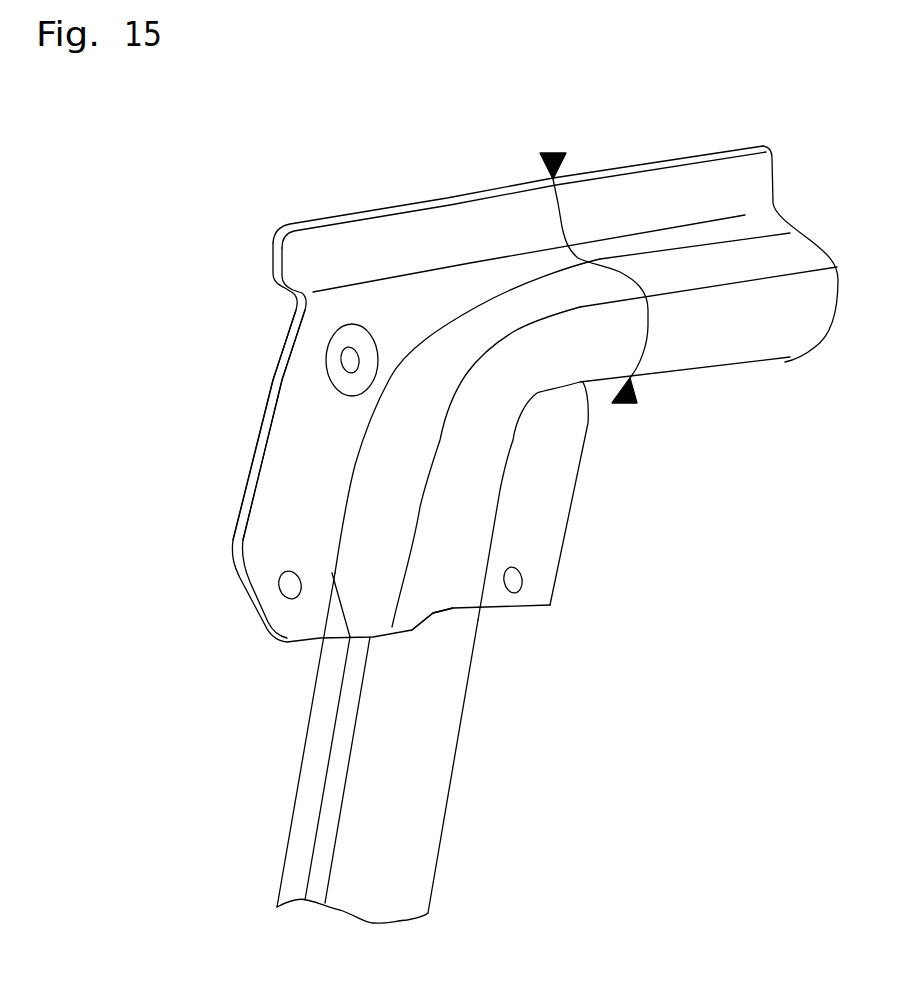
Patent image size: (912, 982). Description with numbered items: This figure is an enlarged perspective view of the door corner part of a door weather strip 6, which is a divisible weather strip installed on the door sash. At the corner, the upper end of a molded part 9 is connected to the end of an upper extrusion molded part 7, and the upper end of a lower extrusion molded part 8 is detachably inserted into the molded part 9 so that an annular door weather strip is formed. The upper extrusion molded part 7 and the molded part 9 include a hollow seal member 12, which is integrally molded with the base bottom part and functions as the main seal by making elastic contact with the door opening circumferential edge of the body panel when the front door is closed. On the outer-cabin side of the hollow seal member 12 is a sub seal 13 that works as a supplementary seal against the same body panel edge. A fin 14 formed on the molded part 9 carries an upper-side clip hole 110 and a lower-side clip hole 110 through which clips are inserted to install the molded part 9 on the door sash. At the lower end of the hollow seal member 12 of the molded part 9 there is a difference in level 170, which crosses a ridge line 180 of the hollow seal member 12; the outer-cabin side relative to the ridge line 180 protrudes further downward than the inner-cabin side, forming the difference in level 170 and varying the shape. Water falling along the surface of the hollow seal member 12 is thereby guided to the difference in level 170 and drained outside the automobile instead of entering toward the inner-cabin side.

The door weather strip 6 is at (248, 207).
The upper extrusion molded part 7 is at (708, 151).
The lower extrusion molded part 8 is at (301, 733).
The molded part 9 is at (272, 384).
The hollow seal member 12 is at (777, 257).
The sub seal 13 is at (445, 199).
The fin 14 is at (270, 495).
The clip hole 110 is at (327, 370).
The difference in level 170 is at (437, 621).
The ridge line 180 is at (425, 487).